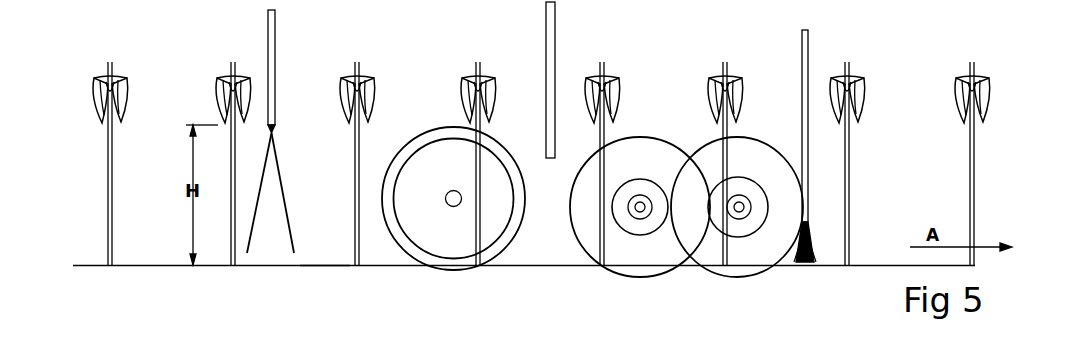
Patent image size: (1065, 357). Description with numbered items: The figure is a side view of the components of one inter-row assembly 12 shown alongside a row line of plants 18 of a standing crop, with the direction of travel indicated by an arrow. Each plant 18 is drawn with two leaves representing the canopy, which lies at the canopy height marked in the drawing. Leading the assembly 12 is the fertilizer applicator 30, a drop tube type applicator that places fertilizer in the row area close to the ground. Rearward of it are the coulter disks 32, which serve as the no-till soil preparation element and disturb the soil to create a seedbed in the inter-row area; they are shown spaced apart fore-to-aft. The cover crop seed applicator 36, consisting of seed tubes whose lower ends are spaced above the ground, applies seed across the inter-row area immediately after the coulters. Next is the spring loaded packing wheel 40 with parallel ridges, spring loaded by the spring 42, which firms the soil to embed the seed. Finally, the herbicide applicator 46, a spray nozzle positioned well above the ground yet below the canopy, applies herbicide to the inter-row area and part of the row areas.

The inter-row assembly 12 is at (370, 275).
The plant 18 is at (108, 150).
The fertilizer applicator 30 is at (812, 47).
The coulter disk 32 is at (642, 152).
The cover crop seed applicator 36 is at (562, 35).
The packing wheel 40 is at (396, 232).
The spring 42 is at (320, 258).
The herbicide applicator 46 is at (276, 33).